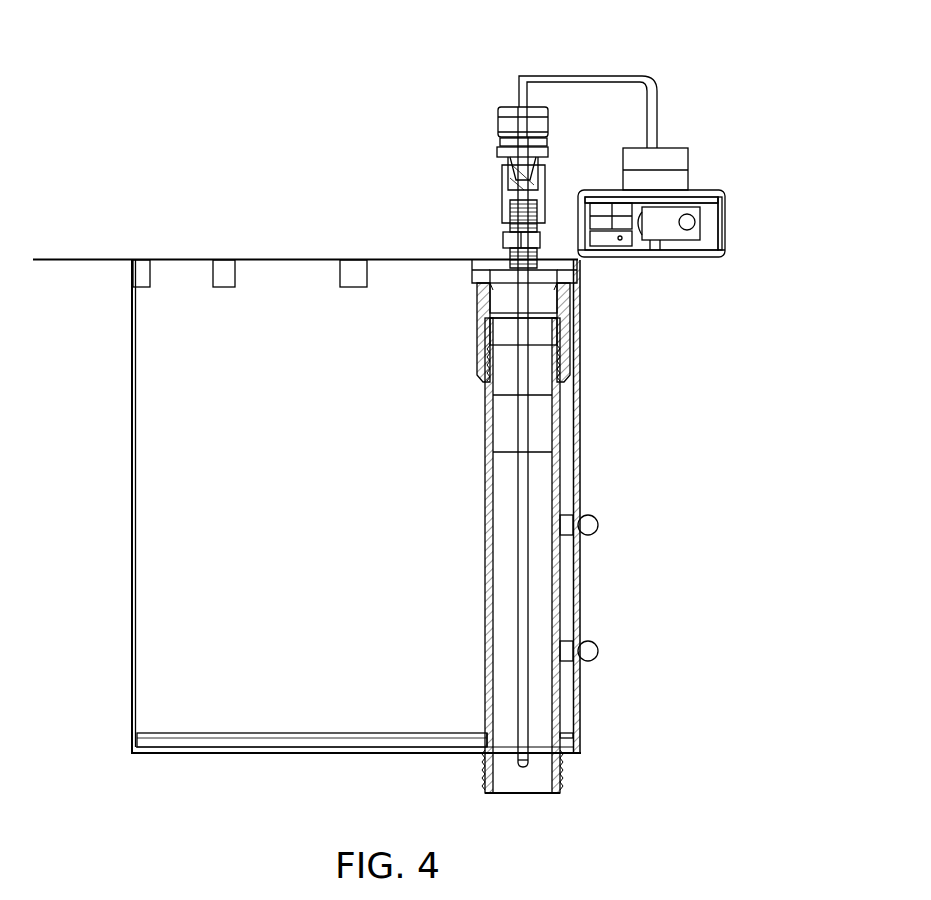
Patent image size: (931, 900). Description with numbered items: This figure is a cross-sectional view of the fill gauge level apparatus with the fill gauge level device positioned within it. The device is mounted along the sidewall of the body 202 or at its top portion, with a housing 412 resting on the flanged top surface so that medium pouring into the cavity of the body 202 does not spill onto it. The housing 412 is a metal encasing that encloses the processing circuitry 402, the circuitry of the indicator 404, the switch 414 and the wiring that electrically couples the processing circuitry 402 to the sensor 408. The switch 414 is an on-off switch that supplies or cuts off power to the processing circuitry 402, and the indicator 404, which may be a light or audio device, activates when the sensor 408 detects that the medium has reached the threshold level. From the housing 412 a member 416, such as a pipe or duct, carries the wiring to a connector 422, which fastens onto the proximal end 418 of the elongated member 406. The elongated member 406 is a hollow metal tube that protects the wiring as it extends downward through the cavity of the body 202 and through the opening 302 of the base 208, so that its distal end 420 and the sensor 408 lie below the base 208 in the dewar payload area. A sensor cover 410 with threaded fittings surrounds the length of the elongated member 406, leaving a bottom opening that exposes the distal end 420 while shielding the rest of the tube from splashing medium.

The body 202 is at (132, 484).
The base 208 is at (160, 738).
The opening 302 is at (487, 743).
The processing circuitry 402 is at (720, 258).
The indicator 404 is at (680, 182).
The elongated member 406 is at (530, 300).
The sensor 408 is at (520, 766).
The sensor cover 410 is at (560, 588).
The housing 412 is at (723, 192).
The switch 414 is at (688, 228).
The member 416 is at (590, 78).
The proximal end 418 is at (520, 284).
The distal end 420 is at (523, 690).
The connector 422 is at (510, 160).